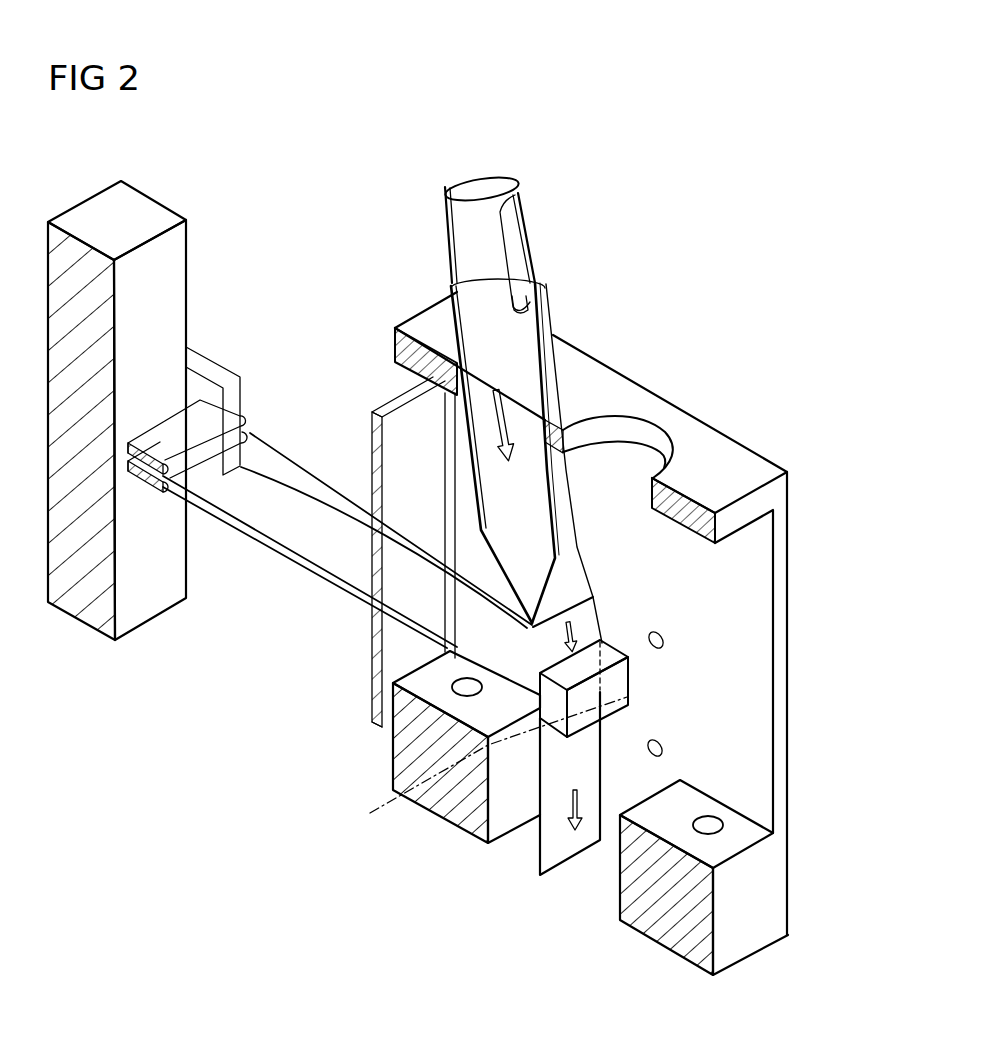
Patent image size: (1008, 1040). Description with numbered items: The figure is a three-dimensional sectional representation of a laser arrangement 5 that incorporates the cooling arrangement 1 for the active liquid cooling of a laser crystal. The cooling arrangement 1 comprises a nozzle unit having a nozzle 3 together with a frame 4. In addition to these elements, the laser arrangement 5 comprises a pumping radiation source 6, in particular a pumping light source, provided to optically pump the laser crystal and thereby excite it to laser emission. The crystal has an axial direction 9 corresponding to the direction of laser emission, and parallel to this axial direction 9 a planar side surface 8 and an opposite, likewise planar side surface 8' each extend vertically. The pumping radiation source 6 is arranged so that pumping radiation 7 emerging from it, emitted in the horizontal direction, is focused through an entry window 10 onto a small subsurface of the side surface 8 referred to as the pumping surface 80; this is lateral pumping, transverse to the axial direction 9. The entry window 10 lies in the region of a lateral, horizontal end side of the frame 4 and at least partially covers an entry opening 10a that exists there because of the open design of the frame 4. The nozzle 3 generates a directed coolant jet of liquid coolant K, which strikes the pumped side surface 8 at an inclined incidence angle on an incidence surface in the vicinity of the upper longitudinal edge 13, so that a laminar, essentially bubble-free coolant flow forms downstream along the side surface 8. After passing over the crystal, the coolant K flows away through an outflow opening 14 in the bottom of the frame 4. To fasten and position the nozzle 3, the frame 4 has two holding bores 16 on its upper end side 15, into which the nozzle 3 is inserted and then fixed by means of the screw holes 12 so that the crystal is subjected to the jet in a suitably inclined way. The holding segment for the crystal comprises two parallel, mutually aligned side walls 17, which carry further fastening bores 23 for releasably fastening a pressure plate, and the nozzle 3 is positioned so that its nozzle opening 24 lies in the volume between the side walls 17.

The cooling arrangement 1 is at (698, 296).
The nozzle 3 is at (518, 245).
The frame 4 is at (703, 418).
The laser arrangement 5 is at (279, 168).
The pumping radiation source 6 is at (111, 222).
The pumping radiation 7 is at (283, 548).
The side surface 8 is at (434, 747).
The side surface 8' is at (693, 843).
The axial direction 9 is at (395, 796).
The entry window 10 is at (372, 462).
The entry opening 10a is at (415, 380).
The screw hole 12 is at (665, 518).
The upper longitudinal edge 13 is at (538, 817).
The outflow opening 14 is at (595, 878).
The upper end side 15 is at (735, 470).
The holding bore 16 is at (620, 460).
The side wall 17 is at (782, 758).
The further fastening bore 23 is at (662, 640).
The nozzle opening 24 is at (450, 622).
The pumping surface 80 is at (600, 712).
The coolant K is at (500, 414).